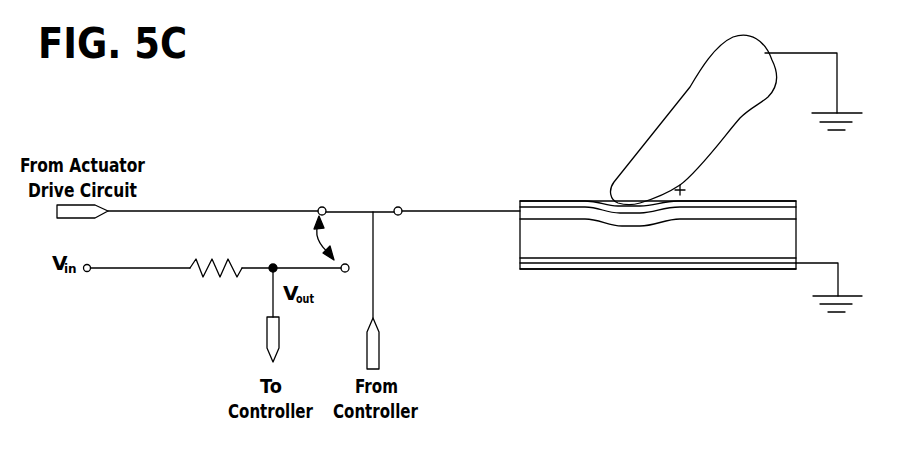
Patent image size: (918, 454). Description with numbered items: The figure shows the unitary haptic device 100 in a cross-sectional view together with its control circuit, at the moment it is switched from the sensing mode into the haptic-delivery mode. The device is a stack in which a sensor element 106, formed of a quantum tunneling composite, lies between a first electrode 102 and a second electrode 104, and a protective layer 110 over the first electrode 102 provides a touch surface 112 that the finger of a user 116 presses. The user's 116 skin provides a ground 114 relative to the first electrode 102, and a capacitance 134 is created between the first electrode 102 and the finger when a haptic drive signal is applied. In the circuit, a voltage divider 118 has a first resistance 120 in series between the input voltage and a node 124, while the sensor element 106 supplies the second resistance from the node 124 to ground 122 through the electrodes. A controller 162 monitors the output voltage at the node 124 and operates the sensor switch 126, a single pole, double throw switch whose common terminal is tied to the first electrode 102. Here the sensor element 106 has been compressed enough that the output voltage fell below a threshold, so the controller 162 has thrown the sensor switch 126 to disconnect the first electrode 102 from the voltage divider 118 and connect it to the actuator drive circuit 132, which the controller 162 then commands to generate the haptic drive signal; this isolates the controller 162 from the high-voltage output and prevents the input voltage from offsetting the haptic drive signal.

The unitary haptic device 100 is at (538, 300).
The first electrode 102 is at (796, 213).
The second electrode 104 is at (703, 268).
The sensor element 106 is at (796, 253).
The protective layer 110 is at (797, 202).
The touch surface 112 is at (568, 200).
The ground 114 is at (833, 80).
The user 116 is at (683, 106).
The voltage divider 118 is at (130, 270).
The first resistance 120 is at (218, 272).
The ground 122 is at (838, 280).
The node 124 is at (233, 262).
The sensor switch 126 is at (350, 212).
The actuator drive circuit 132 is at (60, 218).
The capacitance 134 is at (684, 194).
The controller 162 is at (268, 328).